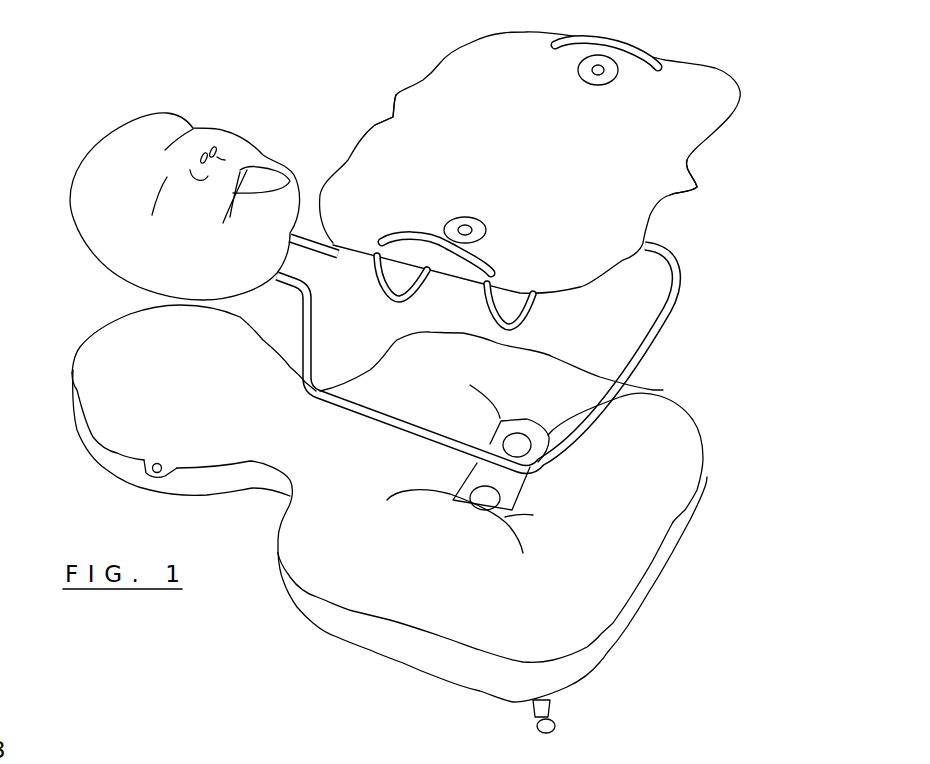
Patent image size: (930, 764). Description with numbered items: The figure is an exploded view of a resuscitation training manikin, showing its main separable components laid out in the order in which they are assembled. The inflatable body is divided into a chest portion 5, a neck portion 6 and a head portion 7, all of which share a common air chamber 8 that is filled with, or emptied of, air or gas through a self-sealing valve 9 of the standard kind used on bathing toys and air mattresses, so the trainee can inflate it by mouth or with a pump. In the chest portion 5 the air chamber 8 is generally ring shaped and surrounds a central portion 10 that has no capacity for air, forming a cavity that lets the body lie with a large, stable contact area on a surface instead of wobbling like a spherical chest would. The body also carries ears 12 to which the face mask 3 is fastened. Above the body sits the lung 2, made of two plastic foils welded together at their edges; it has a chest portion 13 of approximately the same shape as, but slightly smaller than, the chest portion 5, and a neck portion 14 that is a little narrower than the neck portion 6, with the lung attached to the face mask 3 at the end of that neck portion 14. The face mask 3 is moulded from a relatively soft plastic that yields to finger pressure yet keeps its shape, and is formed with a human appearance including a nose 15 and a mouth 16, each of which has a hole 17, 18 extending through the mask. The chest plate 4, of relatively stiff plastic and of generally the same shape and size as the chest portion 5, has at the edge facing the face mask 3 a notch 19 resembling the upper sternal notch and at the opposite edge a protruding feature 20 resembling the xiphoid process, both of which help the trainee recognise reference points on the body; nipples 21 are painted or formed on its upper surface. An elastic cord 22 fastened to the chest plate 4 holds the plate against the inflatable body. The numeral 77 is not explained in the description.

The lung 2 is at (633, 307).
The face mask 3 is at (117, 147).
The chest plate 4 is at (713, 90).
The chest portion 5 is at (442, 605).
The neck portion 6 is at (267, 437).
The head portion 7 is at (127, 403).
The air chamber 8 is at (370, 472).
The self-sealing valve 9 is at (550, 708).
The central portion 10 is at (503, 480).
The ears 12 is at (157, 473).
The chest portion of the lung 13 is at (657, 273).
The neck portion of the lung 14 is at (300, 243).
The nose 15 is at (198, 145).
The mouth 16 is at (247, 170).
The nose hole 17 is at (212, 147).
The mouth hole 18 is at (258, 194).
The notch 19 is at (390, 116).
The protruding feature 20 is at (700, 187).
The nipples 21 is at (577, 72).
The elastic cord 22 is at (525, 306).
The mounting tab 77 is at (517, 445).